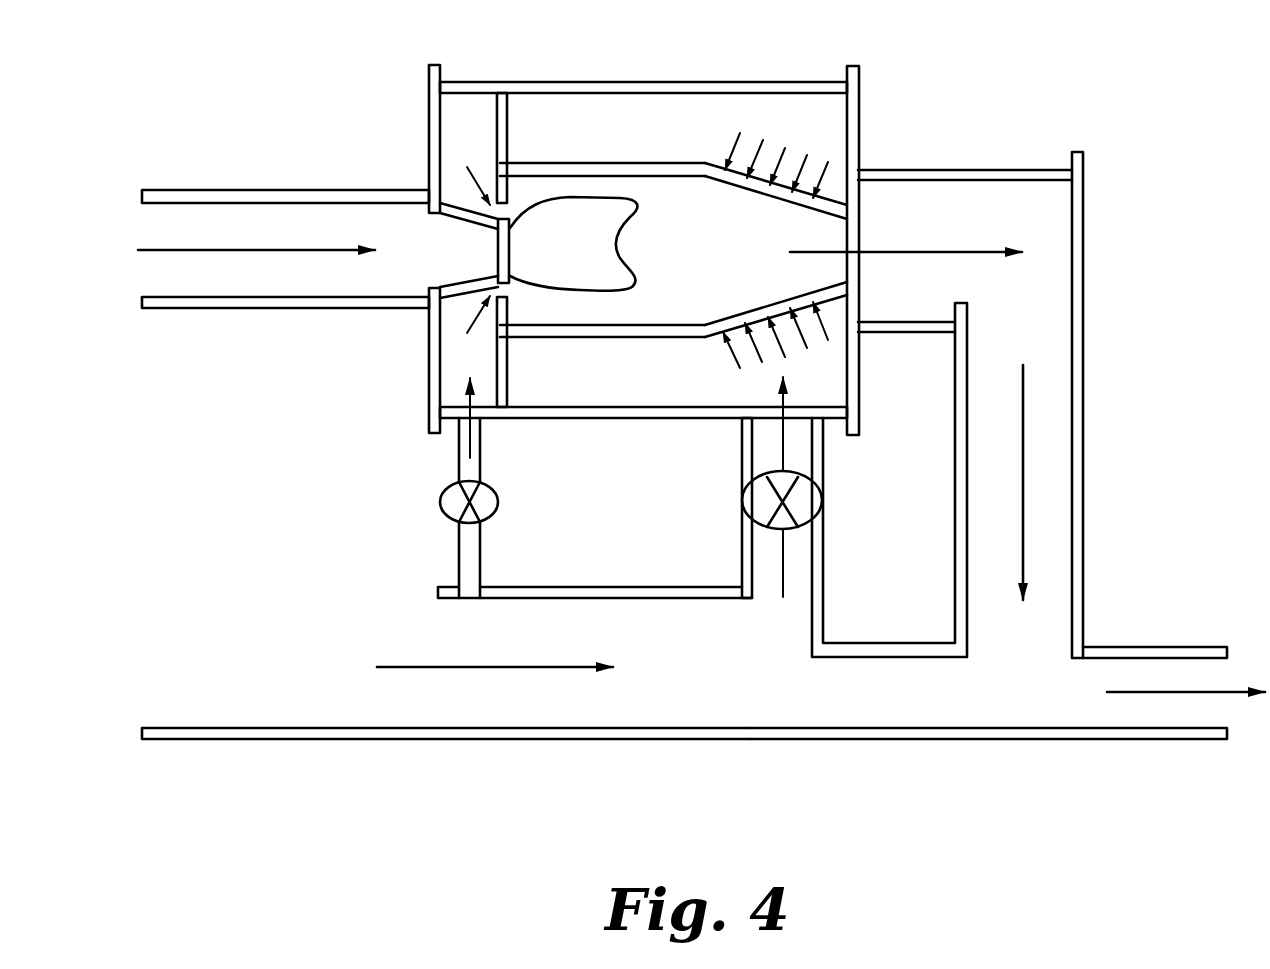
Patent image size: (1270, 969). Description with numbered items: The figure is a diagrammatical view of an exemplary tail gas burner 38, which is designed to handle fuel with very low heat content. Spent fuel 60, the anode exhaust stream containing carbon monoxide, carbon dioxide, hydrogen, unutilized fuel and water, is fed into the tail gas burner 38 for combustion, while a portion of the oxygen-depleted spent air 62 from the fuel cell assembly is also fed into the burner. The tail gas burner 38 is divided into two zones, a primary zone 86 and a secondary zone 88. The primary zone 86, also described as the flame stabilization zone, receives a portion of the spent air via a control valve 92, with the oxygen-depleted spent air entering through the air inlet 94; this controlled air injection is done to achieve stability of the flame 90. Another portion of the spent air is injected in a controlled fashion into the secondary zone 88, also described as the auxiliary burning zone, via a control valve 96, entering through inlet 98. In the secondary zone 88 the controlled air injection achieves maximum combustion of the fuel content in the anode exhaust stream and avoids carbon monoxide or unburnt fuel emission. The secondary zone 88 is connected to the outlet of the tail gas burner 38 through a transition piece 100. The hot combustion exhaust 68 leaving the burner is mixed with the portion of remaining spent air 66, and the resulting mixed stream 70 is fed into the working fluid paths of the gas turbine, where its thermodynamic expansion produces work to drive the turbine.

The tail gas burner 38 is at (243, 130).
The spent fuel 60 is at (250, 277).
The spent air 62 is at (277, 690).
The remaining spent air 66 is at (883, 710).
The combustion exhaust 68 is at (970, 208).
The mixed stream 70 is at (1160, 710).
The primary zone 86 is at (543, 185).
The secondary zone 88 is at (692, 203).
The flame 90 is at (593, 265).
The control valve 92 is at (448, 502).
The air inlet 94 is at (463, 402).
The control valve 96 is at (770, 497).
The inlet 98 is at (792, 413).
The transition piece 100 is at (845, 190).